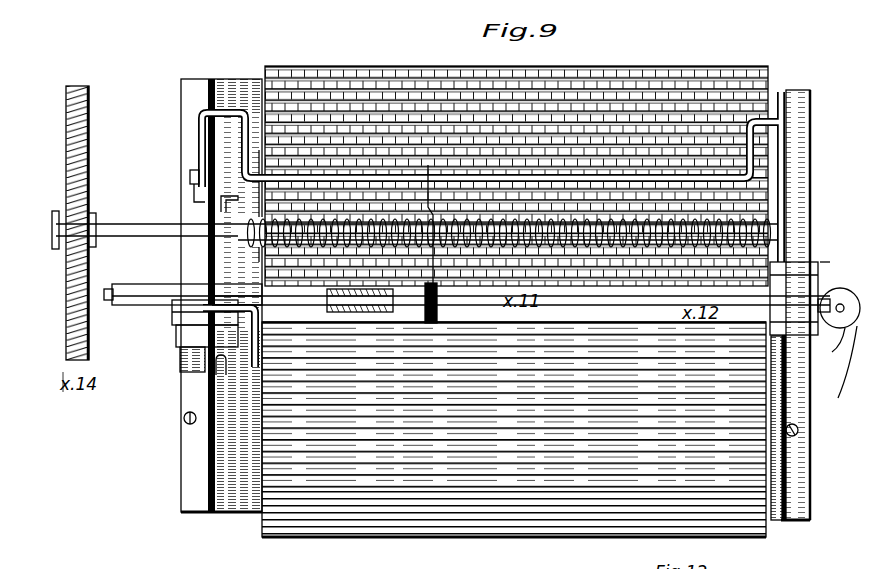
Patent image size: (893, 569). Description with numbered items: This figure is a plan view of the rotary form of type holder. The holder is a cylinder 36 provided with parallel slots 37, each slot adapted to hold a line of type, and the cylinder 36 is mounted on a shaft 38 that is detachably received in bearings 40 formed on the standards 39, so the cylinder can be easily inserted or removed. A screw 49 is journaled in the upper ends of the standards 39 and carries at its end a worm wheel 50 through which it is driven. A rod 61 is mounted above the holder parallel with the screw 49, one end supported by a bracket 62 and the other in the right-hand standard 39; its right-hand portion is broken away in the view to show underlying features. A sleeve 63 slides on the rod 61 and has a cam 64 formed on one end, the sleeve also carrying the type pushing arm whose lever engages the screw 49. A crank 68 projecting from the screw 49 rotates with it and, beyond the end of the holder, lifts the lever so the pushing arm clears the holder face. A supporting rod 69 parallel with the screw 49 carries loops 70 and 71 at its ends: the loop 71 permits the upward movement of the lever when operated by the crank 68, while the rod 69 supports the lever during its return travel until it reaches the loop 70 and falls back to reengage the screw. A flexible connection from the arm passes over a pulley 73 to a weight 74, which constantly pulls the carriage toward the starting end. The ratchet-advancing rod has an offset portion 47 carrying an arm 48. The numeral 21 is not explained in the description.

The stop 21 is at (843, 248).
The cylinder 36 is at (425, 538).
The slots 37 is at (528, 505).
The shaft 38 is at (818, 292).
The standards 39 is at (210, 106).
The bearings 40 is at (176, 340).
The offset portion 47 is at (200, 352).
The arm 48 is at (172, 318).
The screw 49 is at (250, 208).
The worm wheel 50 is at (89, 184).
The rod 61 is at (318, 300).
The bracket 62 is at (140, 284).
The sleeve 63 is at (373, 300).
The cam 64 is at (437, 318).
The crank 68 is at (228, 196).
The supporting rod 69 is at (560, 182).
The loop 70 is at (779, 100).
The loop 71 is at (220, 112).
The pulley 73 is at (830, 350).
The weight 74 is at (838, 372).